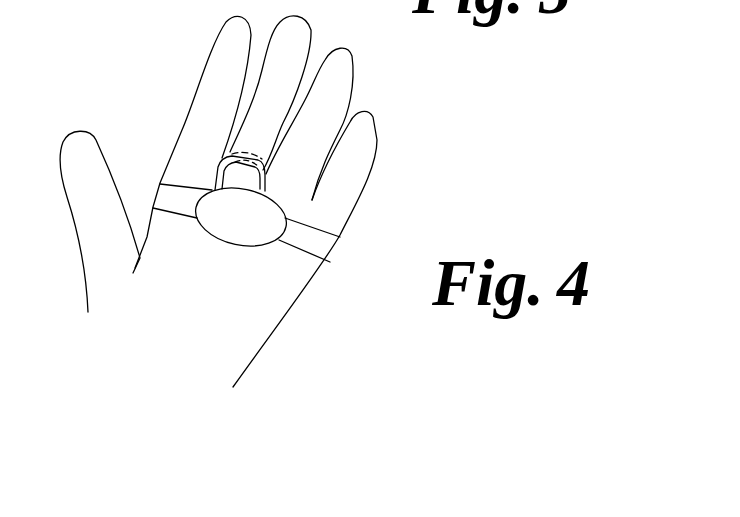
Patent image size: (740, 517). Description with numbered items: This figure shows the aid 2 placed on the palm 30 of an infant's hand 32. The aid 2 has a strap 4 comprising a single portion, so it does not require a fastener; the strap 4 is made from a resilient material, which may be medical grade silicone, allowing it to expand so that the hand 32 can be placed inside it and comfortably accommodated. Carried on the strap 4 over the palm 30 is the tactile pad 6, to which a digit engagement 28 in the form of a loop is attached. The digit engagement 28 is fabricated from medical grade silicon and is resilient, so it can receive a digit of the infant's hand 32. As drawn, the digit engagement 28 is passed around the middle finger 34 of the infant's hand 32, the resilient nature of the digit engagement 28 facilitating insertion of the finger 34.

The hand 2 is at (175, 250).
The strap 4 is at (328, 243).
The tactile pad 6 is at (230, 240).
The digit engagement 28 is at (213, 185).
The palm 30 is at (237, 258).
The infant's hand 32 is at (316, 281).
The middle finger 34 is at (310, 27).